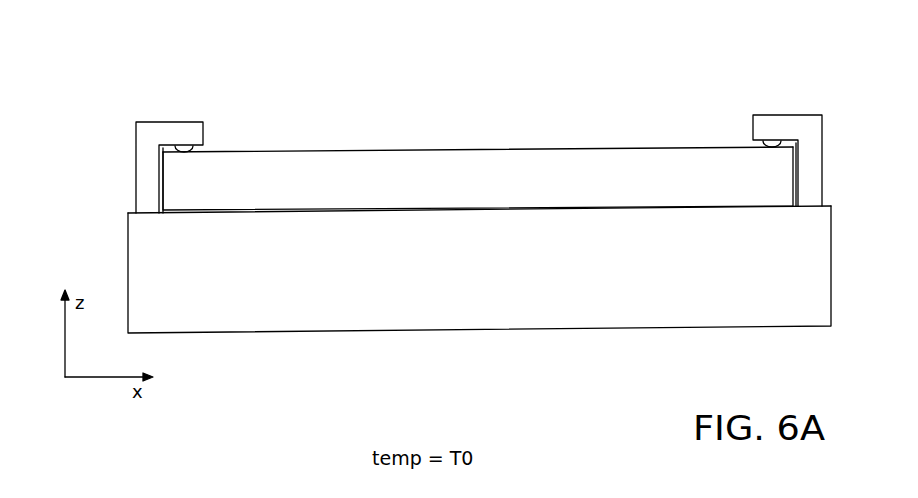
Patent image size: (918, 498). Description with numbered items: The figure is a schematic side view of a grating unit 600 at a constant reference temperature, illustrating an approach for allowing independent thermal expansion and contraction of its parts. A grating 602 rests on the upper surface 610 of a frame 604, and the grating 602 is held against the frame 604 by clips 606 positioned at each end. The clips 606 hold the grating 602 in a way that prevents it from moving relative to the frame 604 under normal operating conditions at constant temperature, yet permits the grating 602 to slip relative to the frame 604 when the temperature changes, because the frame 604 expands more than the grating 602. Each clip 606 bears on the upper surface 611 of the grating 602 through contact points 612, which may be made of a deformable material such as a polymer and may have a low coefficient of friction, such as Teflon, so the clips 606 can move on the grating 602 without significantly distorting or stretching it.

The grating unit 600 is at (171, 85).
The grating 602 is at (478, 141).
The frame 604 is at (479, 300).
The clip 606 is at (137, 165).
The upper surface of the frame 610 is at (625, 208).
The upper surface of the grating 611 is at (550, 148).
The contact points 612 is at (193, 150).